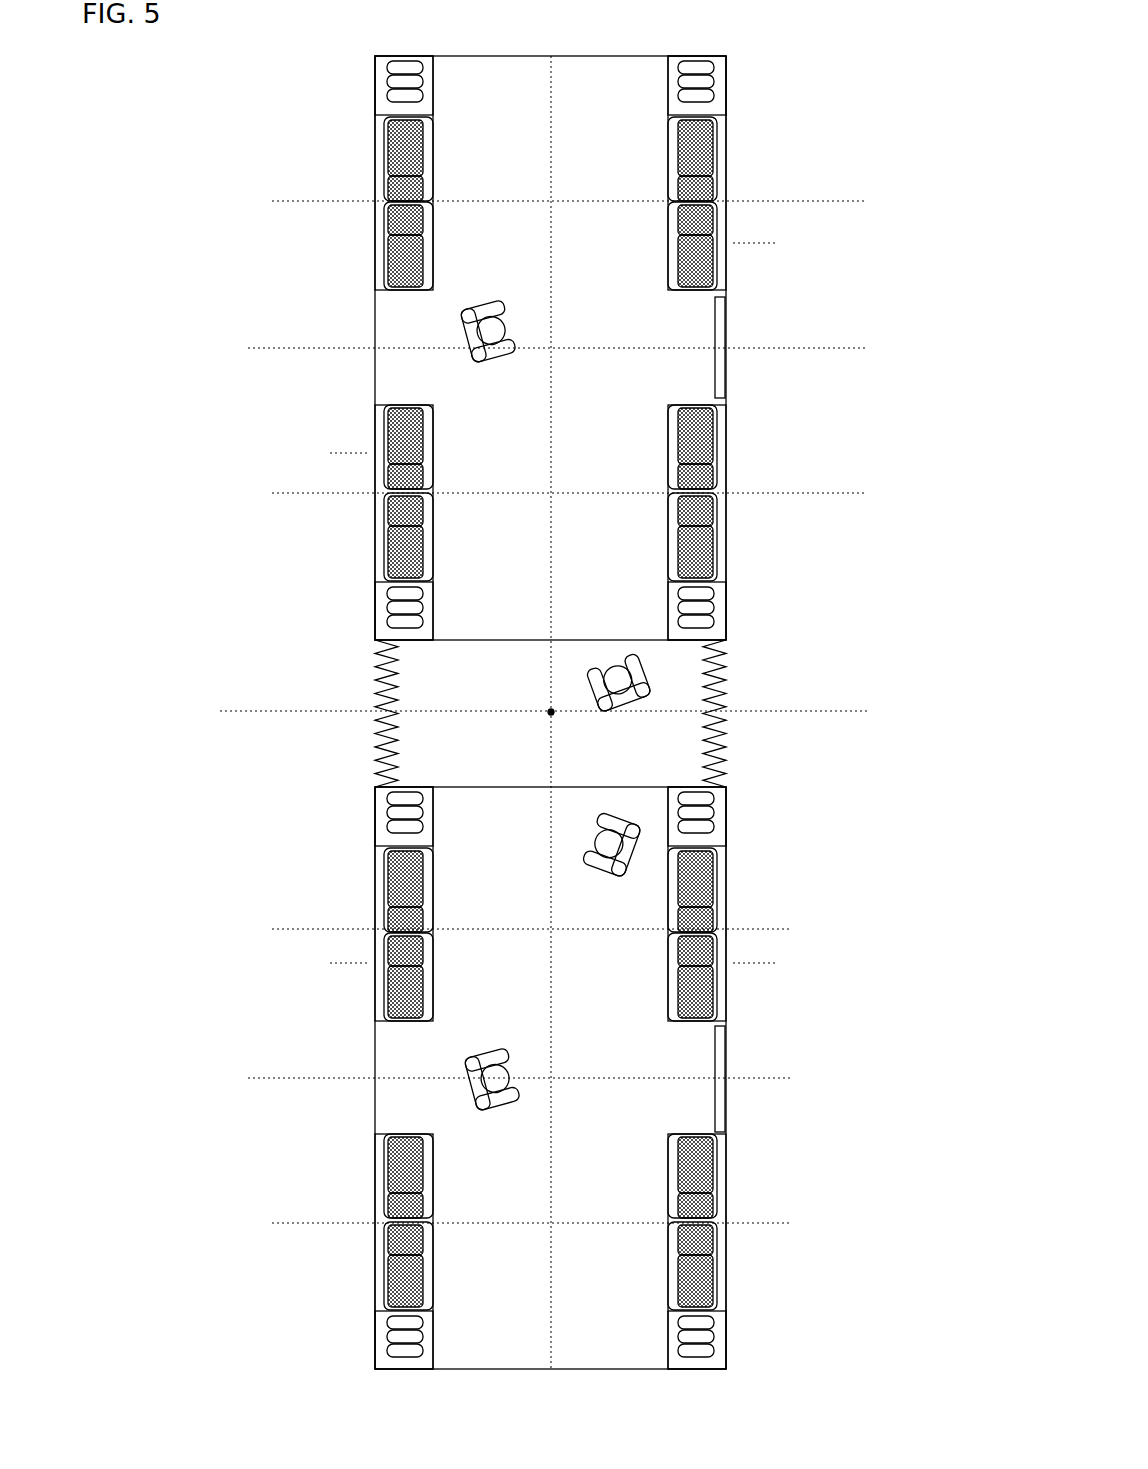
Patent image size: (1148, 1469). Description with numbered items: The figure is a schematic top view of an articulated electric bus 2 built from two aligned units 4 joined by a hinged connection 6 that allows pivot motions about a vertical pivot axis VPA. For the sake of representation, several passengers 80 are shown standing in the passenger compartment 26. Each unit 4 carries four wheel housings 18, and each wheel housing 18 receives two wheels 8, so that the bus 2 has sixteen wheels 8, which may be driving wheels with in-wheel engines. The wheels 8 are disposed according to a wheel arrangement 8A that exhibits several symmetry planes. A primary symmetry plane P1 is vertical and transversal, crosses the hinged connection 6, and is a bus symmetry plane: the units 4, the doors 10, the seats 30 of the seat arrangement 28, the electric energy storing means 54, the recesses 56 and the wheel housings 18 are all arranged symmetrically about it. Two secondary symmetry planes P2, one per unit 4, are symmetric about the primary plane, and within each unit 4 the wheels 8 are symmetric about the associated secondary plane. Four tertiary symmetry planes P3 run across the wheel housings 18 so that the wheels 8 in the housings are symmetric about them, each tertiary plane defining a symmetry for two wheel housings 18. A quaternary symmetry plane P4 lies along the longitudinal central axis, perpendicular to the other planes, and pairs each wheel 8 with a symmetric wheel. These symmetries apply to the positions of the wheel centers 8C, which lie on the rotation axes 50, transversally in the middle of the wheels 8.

The bus 2 is at (185, 172).
The unit 4 is at (225, 305).
The hinged connection 6 is at (300, 667).
The wheel 8 is at (386, 140).
The wheel arrangement 8A is at (870, 132).
The center of wheel 8C is at (432, 142).
The door 10 is at (715, 338).
The wheel housing 18 is at (348, 178).
The passenger compartment 26 is at (523, 425).
The seat arrangement 28 is at (655, 1182).
The seat 30 is at (433, 175).
The rotation axis 50 is at (743, 243).
The electric energy storing means 54 is at (385, 96).
The recess 56 is at (432, 80).
The passenger 80 is at (510, 300).
The primary symmetry plane P1 is at (275, 712).
The secondary symmetry plane P2 is at (300, 348).
The tertiary symmetry plane P3 is at (303, 203).
The quaternary symmetry plane P4 is at (549, 752).
The vertical pivot axis VPA is at (549, 712).